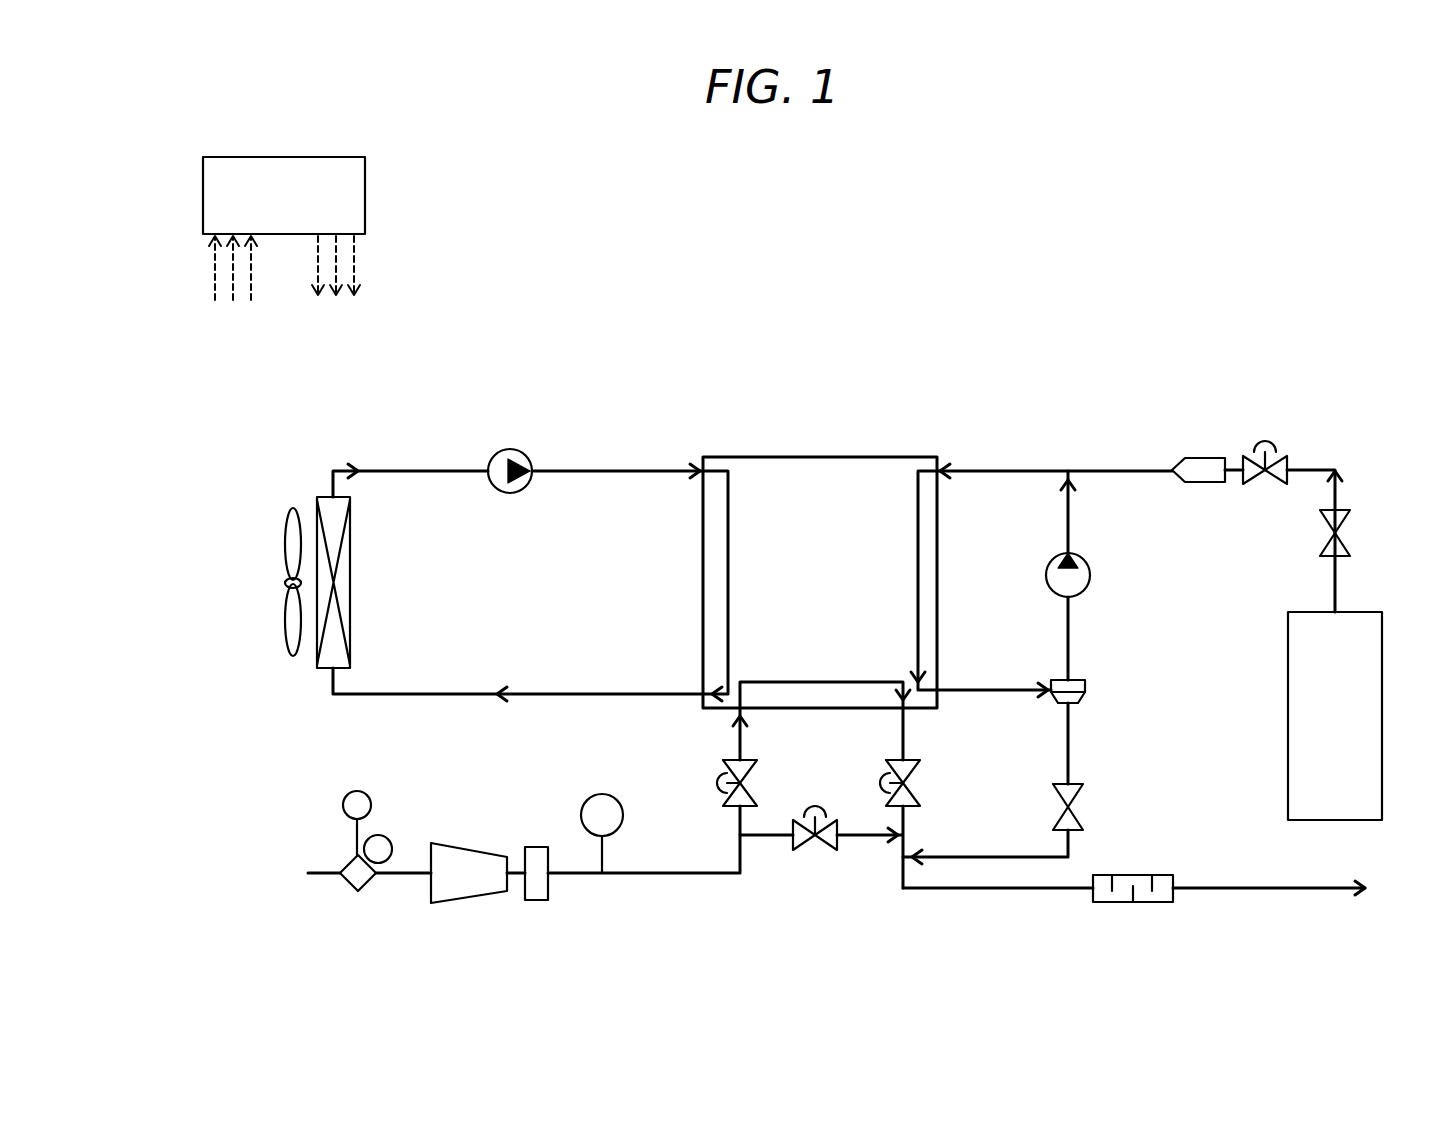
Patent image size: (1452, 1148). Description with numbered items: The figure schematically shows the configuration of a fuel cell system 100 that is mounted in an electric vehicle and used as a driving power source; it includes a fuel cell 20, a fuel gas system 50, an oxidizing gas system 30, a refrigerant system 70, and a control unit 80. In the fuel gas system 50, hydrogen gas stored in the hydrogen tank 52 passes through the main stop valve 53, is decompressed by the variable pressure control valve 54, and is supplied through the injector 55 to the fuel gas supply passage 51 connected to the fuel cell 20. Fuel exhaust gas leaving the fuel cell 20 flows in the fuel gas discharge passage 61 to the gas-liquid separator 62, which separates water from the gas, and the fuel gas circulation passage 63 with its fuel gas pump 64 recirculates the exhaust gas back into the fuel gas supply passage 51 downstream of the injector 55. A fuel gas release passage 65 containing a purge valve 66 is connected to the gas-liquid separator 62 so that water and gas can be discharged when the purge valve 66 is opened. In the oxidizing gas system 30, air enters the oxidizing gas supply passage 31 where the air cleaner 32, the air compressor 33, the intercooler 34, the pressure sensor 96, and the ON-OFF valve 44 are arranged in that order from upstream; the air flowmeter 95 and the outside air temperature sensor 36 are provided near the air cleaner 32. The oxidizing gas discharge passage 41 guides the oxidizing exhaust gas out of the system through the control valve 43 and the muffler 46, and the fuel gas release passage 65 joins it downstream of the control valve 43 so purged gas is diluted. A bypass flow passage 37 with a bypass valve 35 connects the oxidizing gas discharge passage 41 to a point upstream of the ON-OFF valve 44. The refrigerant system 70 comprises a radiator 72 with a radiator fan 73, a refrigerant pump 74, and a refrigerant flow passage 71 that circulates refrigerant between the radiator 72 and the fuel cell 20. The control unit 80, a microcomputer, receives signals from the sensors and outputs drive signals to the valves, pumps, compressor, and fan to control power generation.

The fuel cell system 100 is at (1135, 165).
The control unit 80 is at (335, 157).
The fuel cell 20 is at (887, 454).
The refrigerant system 70 is at (565, 455).
The refrigerant flow passage 71 is at (624, 690).
The radiator 72 is at (323, 495).
The radiator fan 73 is at (292, 508).
The refrigerant pump 74 is at (509, 496).
The fuel gas system 50 is at (1262, 397).
The fuel gas supply passage 51 is at (1093, 467).
The hydrogen tank 52 is at (1355, 612).
The main stop valve 53 is at (1327, 537).
The variable pressure control valve 54 is at (1287, 460).
The injector 55 is at (1203, 455).
The fuel gas discharge passage 61 is at (993, 693).
The gas-liquid separator 62 is at (1077, 703).
The fuel gas circulation passage 63 is at (1073, 640).
The fuel gas pump 64 is at (1092, 575).
The fuel gas release passage 65 is at (1072, 762).
The purge valve 66 is at (1080, 820).
The oxidizing gas discharge passage 41 is at (945, 893).
The muffler 46 is at (1138, 875).
The oxidizing gas system 30 is at (270, 820).
The oxidizing gas supply passage 31 is at (675, 870).
The air cleaner 32 is at (348, 863).
The air compressor 33 is at (466, 845).
The intercooler 34 is at (535, 847).
The bypass valve 35 is at (802, 850).
The outside air temperature sensor 36 is at (355, 791).
The bypass flow passage 37 is at (868, 843).
The control valve 43 is at (895, 772).
The ON-OFF valve 44 is at (730, 772).
The air flowmeter 95 is at (392, 834).
The pressure sensor 96 is at (603, 795).